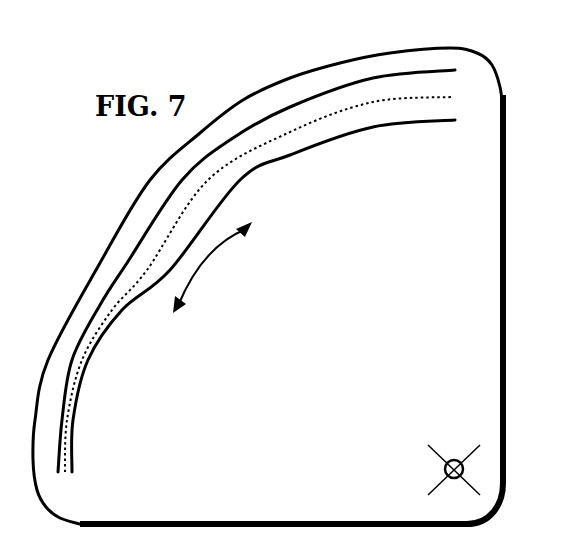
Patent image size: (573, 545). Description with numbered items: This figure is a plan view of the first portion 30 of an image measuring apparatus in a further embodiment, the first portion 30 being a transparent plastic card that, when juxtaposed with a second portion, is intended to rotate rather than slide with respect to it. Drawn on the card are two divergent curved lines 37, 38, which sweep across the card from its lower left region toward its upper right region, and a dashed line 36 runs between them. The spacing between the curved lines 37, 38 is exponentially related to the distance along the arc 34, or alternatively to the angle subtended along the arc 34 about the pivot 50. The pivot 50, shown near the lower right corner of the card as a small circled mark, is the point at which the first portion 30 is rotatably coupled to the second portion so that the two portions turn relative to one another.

The first portion (transparent plastic card) 30 is at (286, 506).
The arc 34 is at (213, 257).
The pivot/hinge line (fold line) 36 is at (445, 93).
The divergent curved line 37 is at (442, 47).
The divergent curved line 38 is at (413, 125).
The pivot 50 is at (443, 467).